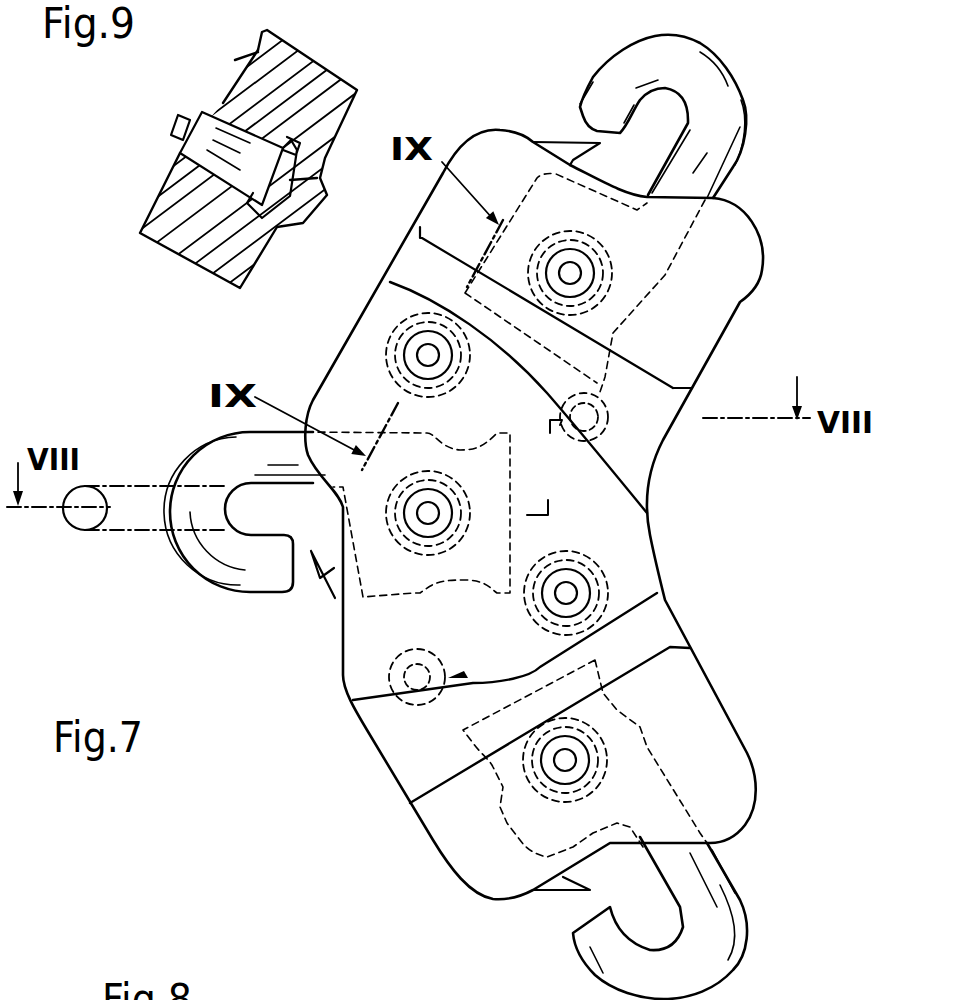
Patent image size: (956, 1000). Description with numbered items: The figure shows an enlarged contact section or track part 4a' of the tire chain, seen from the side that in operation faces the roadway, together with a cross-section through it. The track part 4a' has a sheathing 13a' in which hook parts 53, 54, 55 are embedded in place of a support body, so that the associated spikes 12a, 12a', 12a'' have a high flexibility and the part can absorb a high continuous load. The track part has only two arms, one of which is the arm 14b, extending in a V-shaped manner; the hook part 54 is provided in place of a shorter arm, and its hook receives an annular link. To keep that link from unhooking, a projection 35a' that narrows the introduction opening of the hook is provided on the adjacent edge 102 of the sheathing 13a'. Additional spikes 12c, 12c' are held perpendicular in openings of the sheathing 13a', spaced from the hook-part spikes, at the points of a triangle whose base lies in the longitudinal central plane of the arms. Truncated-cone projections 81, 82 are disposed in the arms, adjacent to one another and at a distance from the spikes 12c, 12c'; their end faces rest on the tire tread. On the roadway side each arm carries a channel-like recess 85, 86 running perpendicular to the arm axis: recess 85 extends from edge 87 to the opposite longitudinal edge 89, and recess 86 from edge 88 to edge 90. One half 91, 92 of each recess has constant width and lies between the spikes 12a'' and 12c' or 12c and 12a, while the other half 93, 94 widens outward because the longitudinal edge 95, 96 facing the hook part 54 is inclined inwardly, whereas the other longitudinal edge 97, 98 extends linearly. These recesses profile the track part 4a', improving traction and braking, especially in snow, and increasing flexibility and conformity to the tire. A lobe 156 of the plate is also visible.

In FIG. 7, the arm 14b is at (723, 707).
In FIG. 7, the track or contact section part 4a' is at (466, 83).
In FIG. 7, the hook part 55 is at (707, 80).
In FIG. 7, the hook part 53 is at (710, 883).
In FIG. 7, the hook part 54 is at (200, 473).
In FIG. 7, the edge of the sheathing 102 is at (335, 533).
In FIG. 7, the projection 35a' is at (258, 604).
In FIG. 7, the spike 12a is at (689, 760).
In FIG. 7, the spike 12a' is at (348, 571).
In FIG. 7, the spike 12a'' is at (688, 237).
In FIG. 7, the spike 12c is at (641, 581).
In FIG. 9, the spike 12c' is at (235, 134).
In FIG. 7, the spike 12c' is at (385, 347).
In FIG. 9, the sheathing 13a' is at (255, 179).
In FIG. 7, the projection 81 is at (417, 677).
In FIG. 7, the projection 82 is at (610, 430).
In FIG. 9, the channel-like recess 85 is at (248, 80).
In FIG. 7, the channel-like recess 85 is at (422, 258).
In FIG. 7, the edge of the arm 87 is at (318, 412).
In FIG. 7, the longitudinal edge 89 is at (697, 383).
In FIG. 7, the recess half 91 is at (417, 275).
In FIG. 7, the recess half 93 is at (657, 407).
In FIG. 7, the longitudinal edge of the recess 95 is at (617, 477).
In FIG. 7, the longitudinal edge of the recess 97 is at (495, 278).
In FIG. 7, the plate lobe 156 is at (760, 280).
In FIG. 7, the recess half 92 is at (653, 613).
In FIG. 7, the edge of the arm 88 is at (693, 655).
In FIG. 7, the longitudinal edge of the recess 96 is at (467, 677).
In FIG. 7, the recess half 94 is at (393, 748).
In FIG. 7, the longitudinal edge 90 is at (403, 800).
In FIG. 7, the channel-like recess 86 is at (470, 767).
In FIG. 7, the longitudinal edge of the recess 98 is at (470, 767).